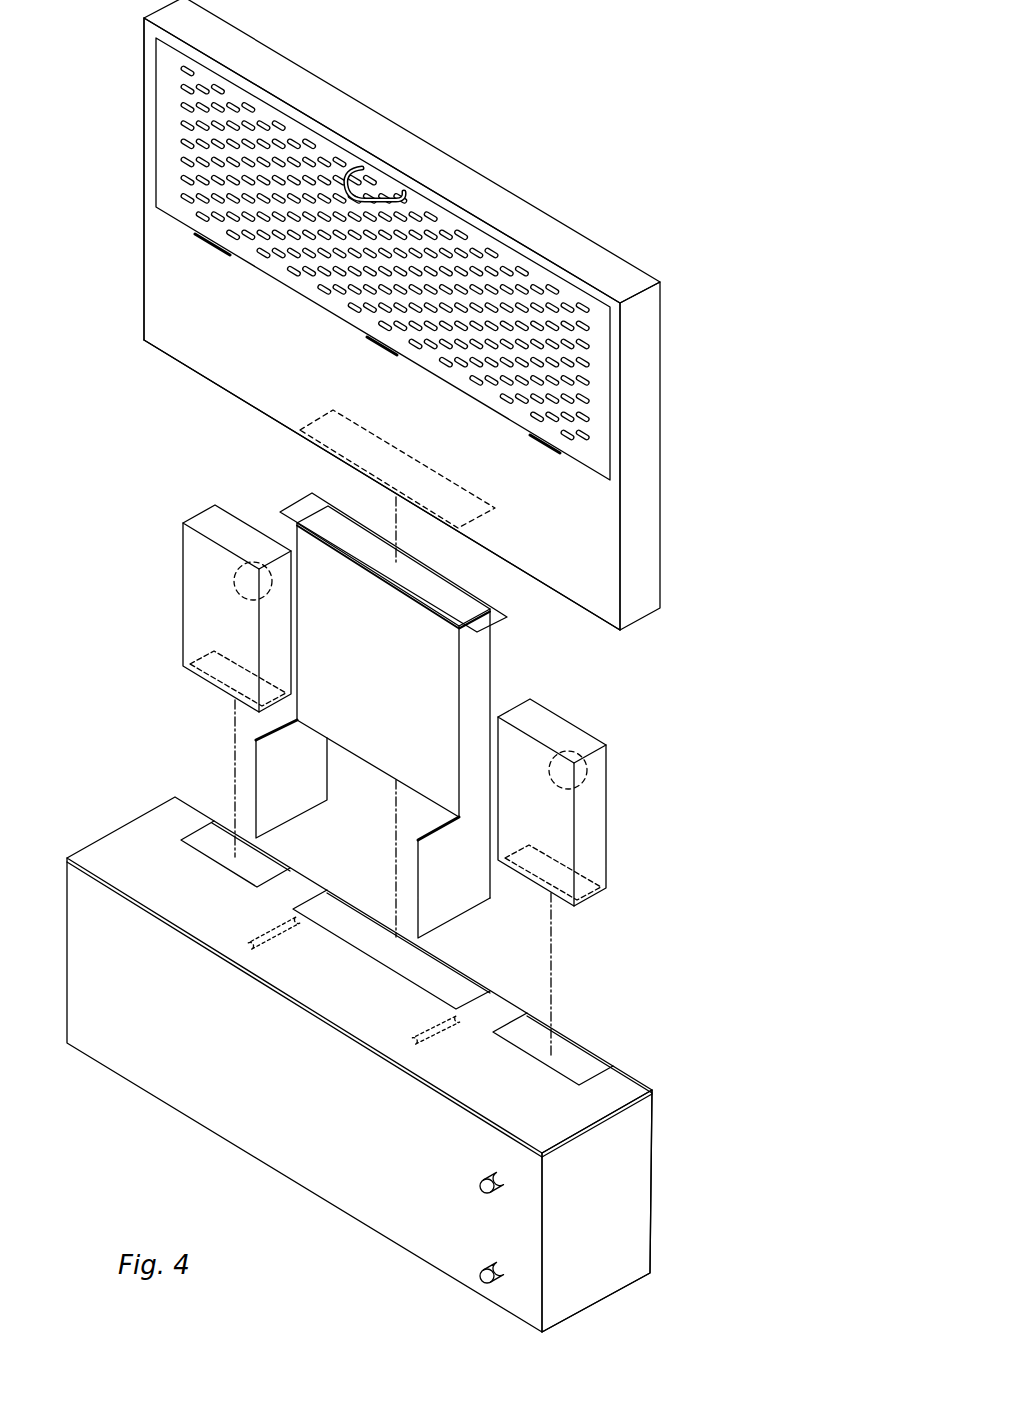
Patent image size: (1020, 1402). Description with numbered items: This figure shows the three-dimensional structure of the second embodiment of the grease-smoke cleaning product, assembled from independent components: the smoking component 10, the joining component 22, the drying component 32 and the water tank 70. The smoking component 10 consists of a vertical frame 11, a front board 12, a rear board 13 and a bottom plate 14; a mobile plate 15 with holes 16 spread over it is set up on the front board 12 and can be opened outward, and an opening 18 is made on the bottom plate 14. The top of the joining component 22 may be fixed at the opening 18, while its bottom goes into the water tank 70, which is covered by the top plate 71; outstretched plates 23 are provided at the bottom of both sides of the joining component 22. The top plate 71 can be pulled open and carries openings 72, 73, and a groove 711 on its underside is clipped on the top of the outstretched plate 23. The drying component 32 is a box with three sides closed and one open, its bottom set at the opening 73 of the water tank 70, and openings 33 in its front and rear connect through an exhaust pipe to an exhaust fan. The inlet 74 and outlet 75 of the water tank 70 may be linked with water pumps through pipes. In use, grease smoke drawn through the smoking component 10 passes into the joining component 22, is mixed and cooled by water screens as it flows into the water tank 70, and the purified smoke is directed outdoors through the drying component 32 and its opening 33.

The smoking component 10 is at (408, 336).
The vertical frame 11 is at (418, 148).
The front board 12 is at (155, 290).
The rear board 13 is at (660, 432).
The bottom plate 14 is at (577, 603).
The mobile plate 15 is at (163, 160).
The holes 16 is at (311, 138).
The opening 18 is at (324, 444).
The joining component 22 is at (431, 729).
The outstretched plates 23 is at (457, 894).
The drying component 32 is at (439, 705).
The openings 33 is at (588, 772).
The water tank 70 is at (398, 1064).
The top plate 71 is at (617, 1088).
The opening 72 is at (343, 924).
The opening 73 is at (572, 1062).
The groove 711 is at (438, 1037).
The inlet 74 is at (490, 1173).
The outlet 75 is at (490, 1265).